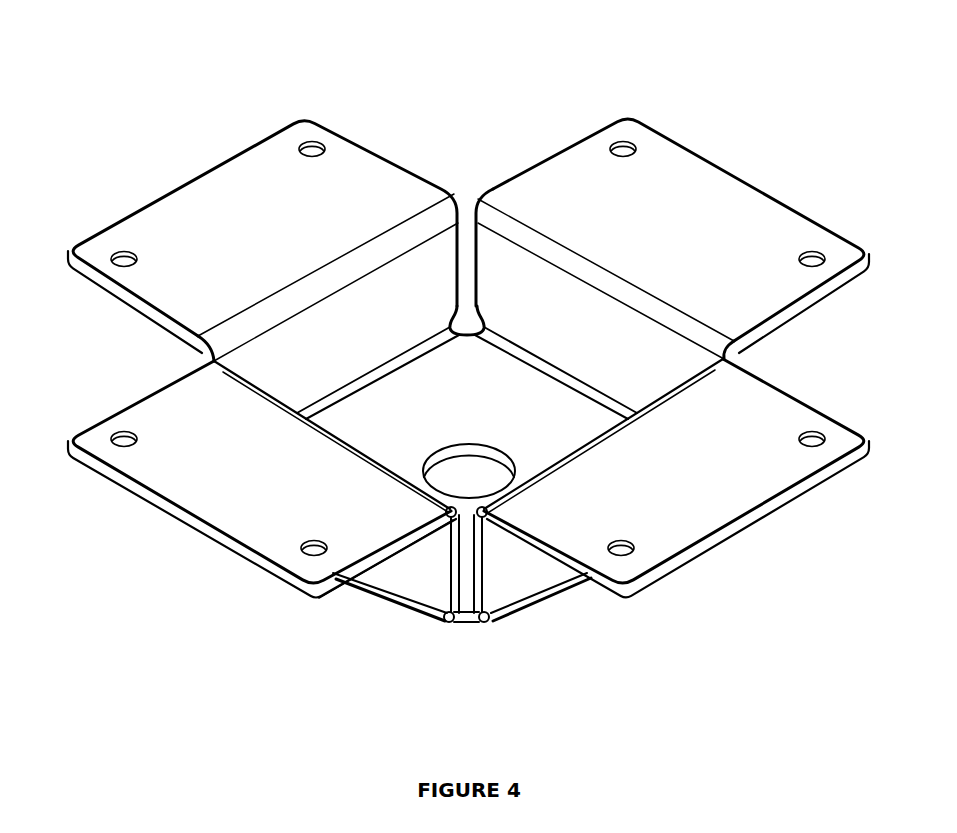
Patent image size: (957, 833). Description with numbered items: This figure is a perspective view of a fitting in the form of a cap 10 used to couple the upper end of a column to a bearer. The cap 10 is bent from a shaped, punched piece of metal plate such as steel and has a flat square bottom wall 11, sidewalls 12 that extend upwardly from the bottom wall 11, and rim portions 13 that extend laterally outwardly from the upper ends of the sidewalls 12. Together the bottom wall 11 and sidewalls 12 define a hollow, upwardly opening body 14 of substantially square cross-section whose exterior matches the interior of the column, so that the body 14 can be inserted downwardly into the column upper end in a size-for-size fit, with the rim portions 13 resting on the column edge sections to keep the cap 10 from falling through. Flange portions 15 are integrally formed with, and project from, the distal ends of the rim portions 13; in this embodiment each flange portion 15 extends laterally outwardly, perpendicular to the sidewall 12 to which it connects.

The cap 10 is at (723, 148).
The bottom wall 11 is at (484, 372).
The sidewalls 12 is at (403, 290).
The rim portions 13 is at (247, 313).
The body 14 is at (336, 600).
The flange portions 15 is at (252, 167).